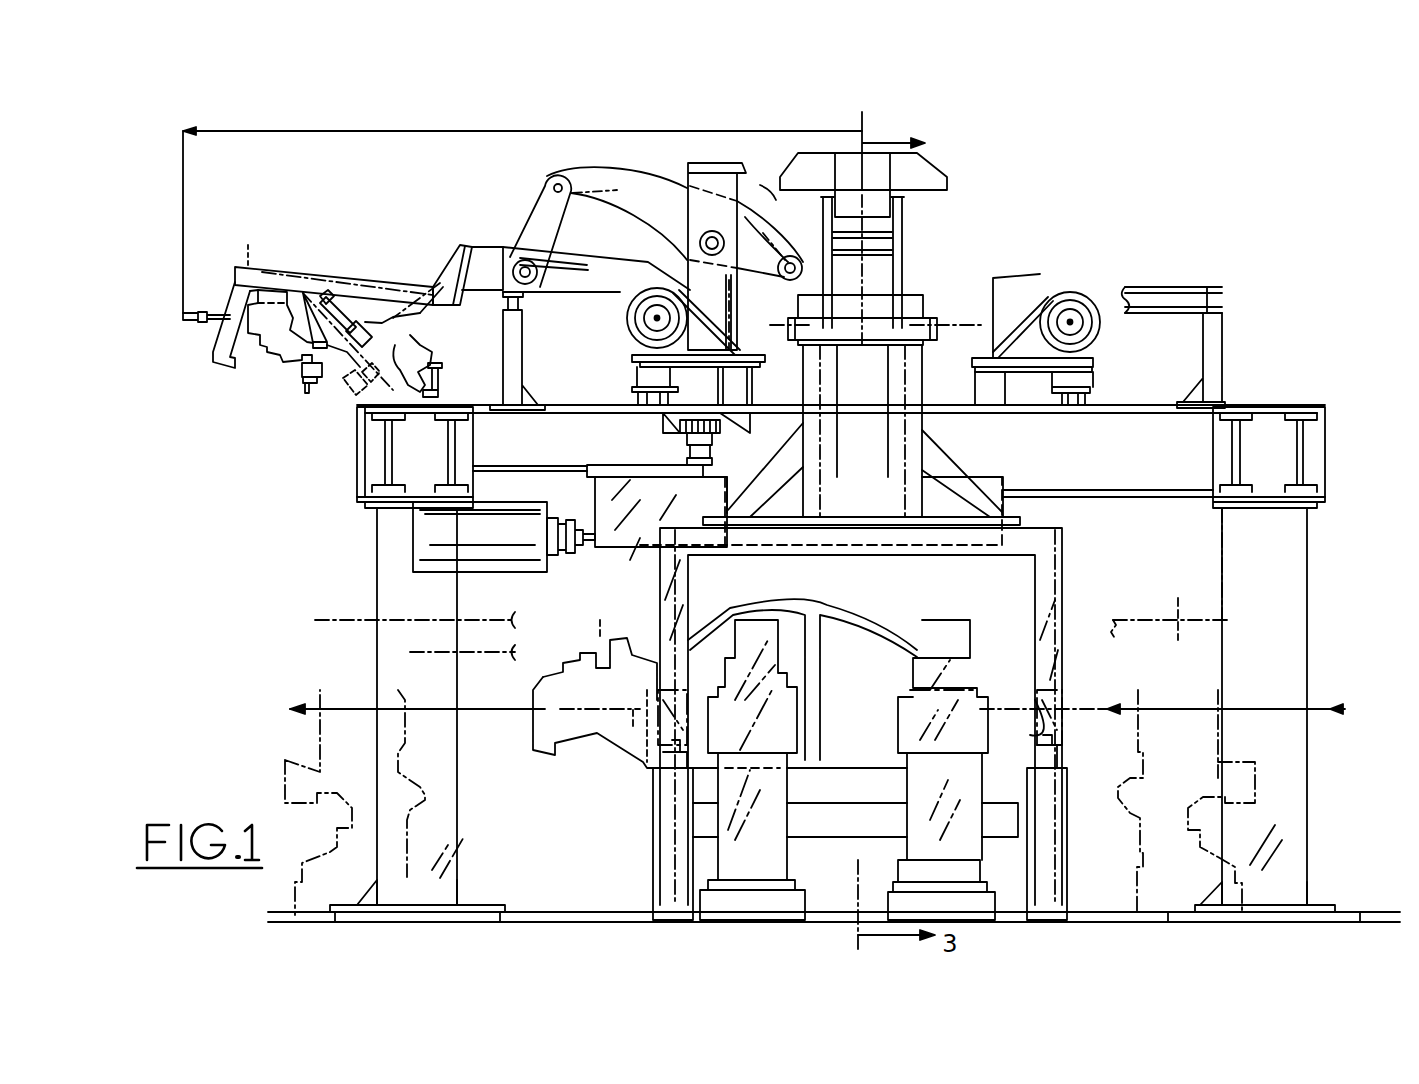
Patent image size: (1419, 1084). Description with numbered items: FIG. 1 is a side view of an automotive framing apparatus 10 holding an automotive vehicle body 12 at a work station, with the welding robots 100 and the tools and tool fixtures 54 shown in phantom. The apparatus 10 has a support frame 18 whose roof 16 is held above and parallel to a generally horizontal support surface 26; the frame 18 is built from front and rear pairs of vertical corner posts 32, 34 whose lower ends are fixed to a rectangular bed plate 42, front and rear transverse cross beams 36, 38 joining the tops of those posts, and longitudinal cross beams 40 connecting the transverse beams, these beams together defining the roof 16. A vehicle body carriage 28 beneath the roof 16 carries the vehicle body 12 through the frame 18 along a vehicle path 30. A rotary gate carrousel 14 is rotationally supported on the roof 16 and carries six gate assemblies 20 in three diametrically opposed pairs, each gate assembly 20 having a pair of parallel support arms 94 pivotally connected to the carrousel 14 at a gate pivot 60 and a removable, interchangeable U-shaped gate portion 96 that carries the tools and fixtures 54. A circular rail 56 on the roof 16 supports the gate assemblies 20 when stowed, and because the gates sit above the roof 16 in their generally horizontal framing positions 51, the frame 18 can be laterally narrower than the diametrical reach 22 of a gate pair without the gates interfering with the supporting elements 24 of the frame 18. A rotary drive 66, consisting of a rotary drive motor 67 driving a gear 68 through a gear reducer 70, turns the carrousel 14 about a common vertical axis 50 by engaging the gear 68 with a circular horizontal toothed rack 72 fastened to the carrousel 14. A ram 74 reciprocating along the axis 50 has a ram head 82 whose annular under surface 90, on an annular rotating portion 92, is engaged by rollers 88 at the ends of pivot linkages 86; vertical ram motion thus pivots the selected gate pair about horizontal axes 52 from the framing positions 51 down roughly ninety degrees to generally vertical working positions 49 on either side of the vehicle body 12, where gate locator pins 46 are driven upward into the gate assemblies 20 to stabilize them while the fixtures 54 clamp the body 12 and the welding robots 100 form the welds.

The automotive framing apparatus 10 is at (1168, 192).
The automotive vehicle body 12 is at (810, 732).
The rotary gate carrousel 14 is at (632, 375).
The support frame roof 16 is at (1230, 417).
The support frame 18 is at (1310, 527).
The gate assemblies 20 is at (471, 228).
The diametrical reach 22 is at (440, 130).
The supporting elements 24 is at (380, 573).
The support surface 26 is at (537, 918).
The vehicle body carriage 28 is at (827, 808).
The vehicle path 30 is at (330, 708).
The front vertical corner posts 32 is at (445, 861).
The rear vertical corner posts 34 is at (1248, 833).
The front transverse cross beam 36 is at (1293, 471).
The rear transverse cross beam 38 is at (445, 465).
The longitudinal cross beams 40 is at (1120, 422).
The bed plate 42 is at (1098, 917).
The gate locator pins 46 is at (667, 770).
The working positions 49 is at (1073, 576).
The common vertical axis 50 is at (872, 133).
The framing positions 51 is at (390, 268).
The horizontal pivot axes 52 is at (655, 318).
The tools and tool fixtures 54 is at (272, 330).
The circular rail 56 is at (523, 300).
The gate pivots 60 is at (660, 306).
The rotary drive 66 is at (460, 556).
The rotary drive motor 67 is at (420, 522).
The gear 68 is at (680, 428).
The gear reducer 70 is at (661, 536).
The circular horizontal toothed rack 72 is at (711, 443).
The ram 74 is at (943, 178).
The ram head 82 is at (946, 167).
The pivot linkages 86 is at (606, 162).
The roller 88 is at (800, 252).
The annular under surface 90 is at (787, 204).
The annular rotating portion 92 is at (948, 196).
The support arms 94 is at (571, 263).
The U-shaped gate portion 96 is at (1090, 537).
The welding robots 100 is at (268, 778).